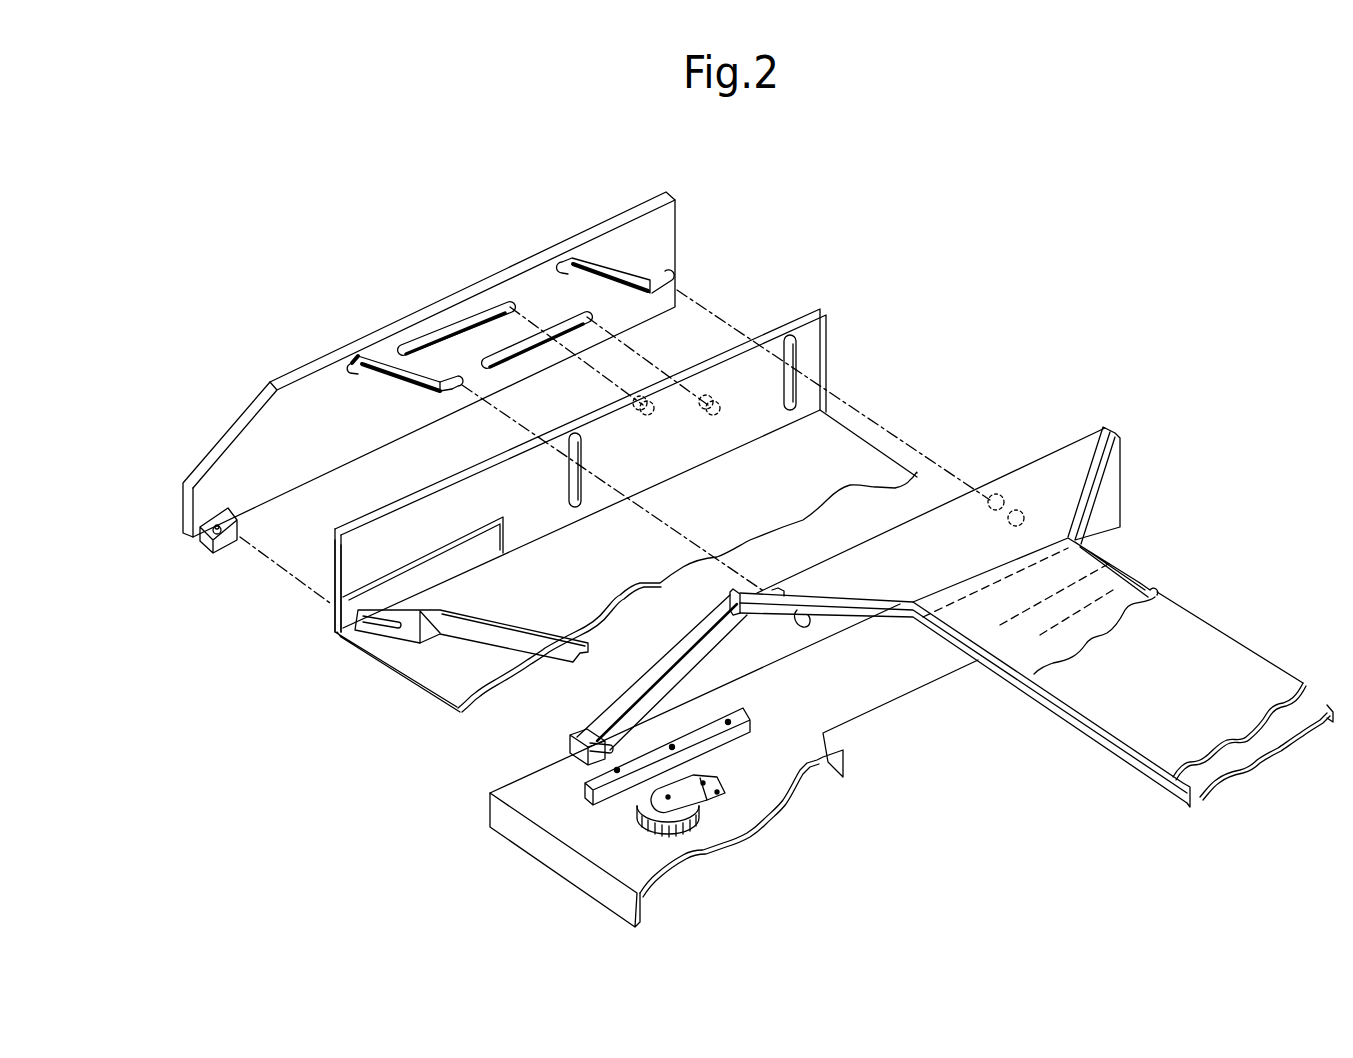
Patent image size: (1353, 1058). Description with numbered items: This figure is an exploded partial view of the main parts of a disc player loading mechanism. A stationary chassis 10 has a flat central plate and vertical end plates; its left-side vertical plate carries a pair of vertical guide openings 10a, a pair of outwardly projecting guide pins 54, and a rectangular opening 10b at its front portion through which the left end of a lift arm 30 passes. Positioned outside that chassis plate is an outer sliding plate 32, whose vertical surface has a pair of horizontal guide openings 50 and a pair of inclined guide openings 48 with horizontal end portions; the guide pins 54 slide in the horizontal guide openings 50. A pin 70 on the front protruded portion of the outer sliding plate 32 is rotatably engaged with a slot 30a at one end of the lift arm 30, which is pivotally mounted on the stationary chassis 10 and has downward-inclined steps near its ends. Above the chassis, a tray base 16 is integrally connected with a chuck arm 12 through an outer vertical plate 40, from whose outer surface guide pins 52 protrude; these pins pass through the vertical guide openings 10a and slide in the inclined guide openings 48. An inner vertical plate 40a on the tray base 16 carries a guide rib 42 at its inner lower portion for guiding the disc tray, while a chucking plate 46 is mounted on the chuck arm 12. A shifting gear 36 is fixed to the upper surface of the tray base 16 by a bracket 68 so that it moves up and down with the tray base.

The stationary chassis 10 is at (410, 657).
The vertical guide openings 10a is at (795, 350).
The rectangular opening 10b is at (383, 588).
The chuck arm 12 is at (1129, 598).
The tray base 16 is at (735, 815).
The lift arm 30 is at (493, 630).
The slot 30a is at (380, 633).
The outer sliding plate 32 is at (228, 437).
The shifting gear 36 is at (672, 830).
The outer vertical plate 40 is at (638, 686).
The inner vertical plate 40a is at (630, 740).
The guide rib 42 is at (575, 778).
The chucking plate 46 is at (1227, 663).
The inclined guide openings 48 is at (615, 267).
The horizontal guide openings 50 is at (557, 326).
The guide pins 52 is at (1013, 507).
The guide pins 54 is at (627, 408).
The bracket 68 is at (683, 785).
The pin 70 is at (203, 527).